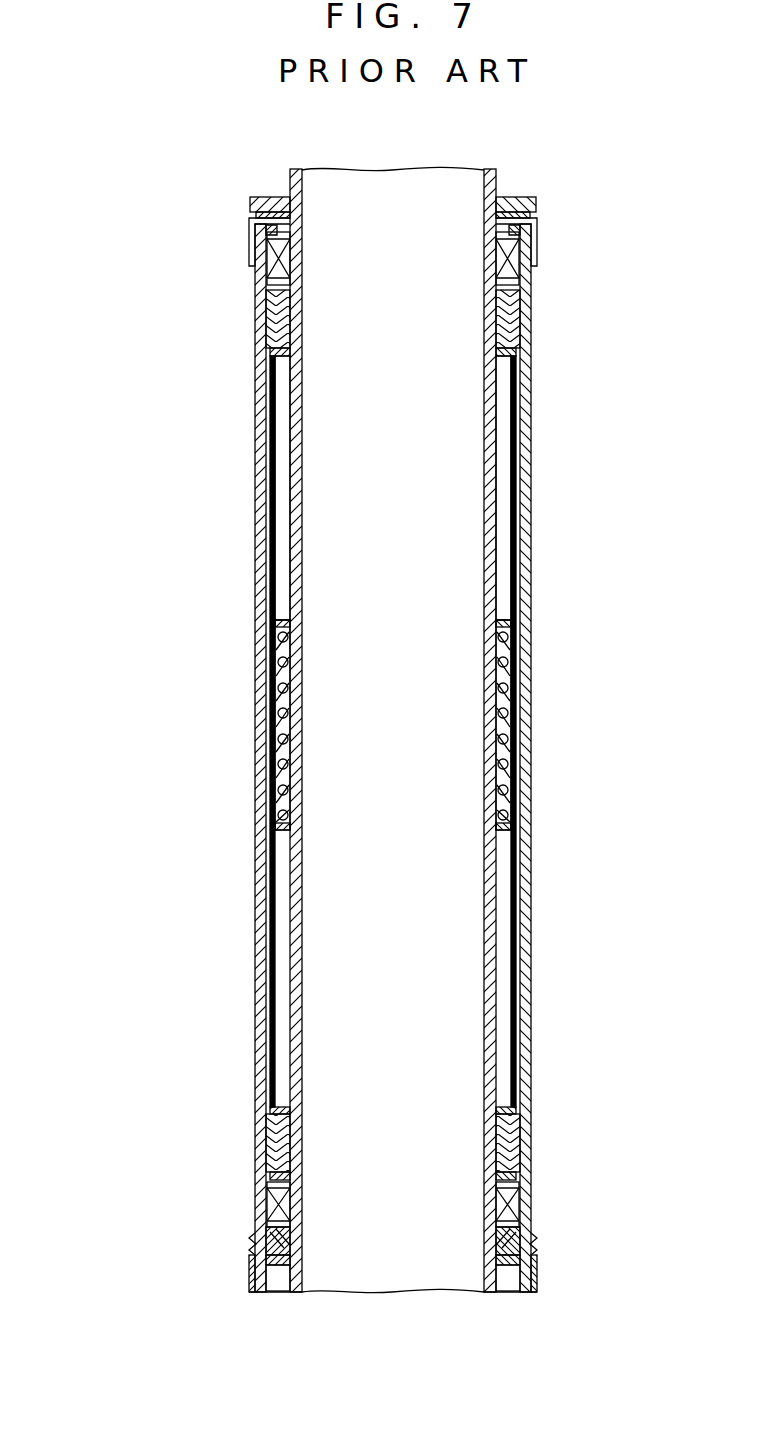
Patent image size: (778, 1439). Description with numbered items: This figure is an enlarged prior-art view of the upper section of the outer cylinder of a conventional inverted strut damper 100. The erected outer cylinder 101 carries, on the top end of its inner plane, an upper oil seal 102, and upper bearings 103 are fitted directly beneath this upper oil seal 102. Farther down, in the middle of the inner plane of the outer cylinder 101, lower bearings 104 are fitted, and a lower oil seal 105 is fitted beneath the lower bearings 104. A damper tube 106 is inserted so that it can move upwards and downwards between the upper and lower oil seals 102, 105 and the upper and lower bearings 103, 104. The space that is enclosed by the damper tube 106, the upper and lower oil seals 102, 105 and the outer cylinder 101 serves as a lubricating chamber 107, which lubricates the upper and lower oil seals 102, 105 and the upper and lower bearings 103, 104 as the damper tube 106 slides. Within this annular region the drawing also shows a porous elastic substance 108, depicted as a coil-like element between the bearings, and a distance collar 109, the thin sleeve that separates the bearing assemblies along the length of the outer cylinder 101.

The inverted strut damper 100 is at (126, 376).
The outer cylinder 101 is at (538, 902).
The upper oil seal 102 is at (268, 266).
The upper bearings 103 is at (264, 330).
The lower bearings 104 is at (264, 1130).
The lower oil seal 105 is at (268, 1202).
The damper tube 106 is at (483, 556).
The lubricating chamber 107 is at (508, 473).
The porous elastic substance 108 is at (270, 612).
The distance collar 109 is at (281, 503).